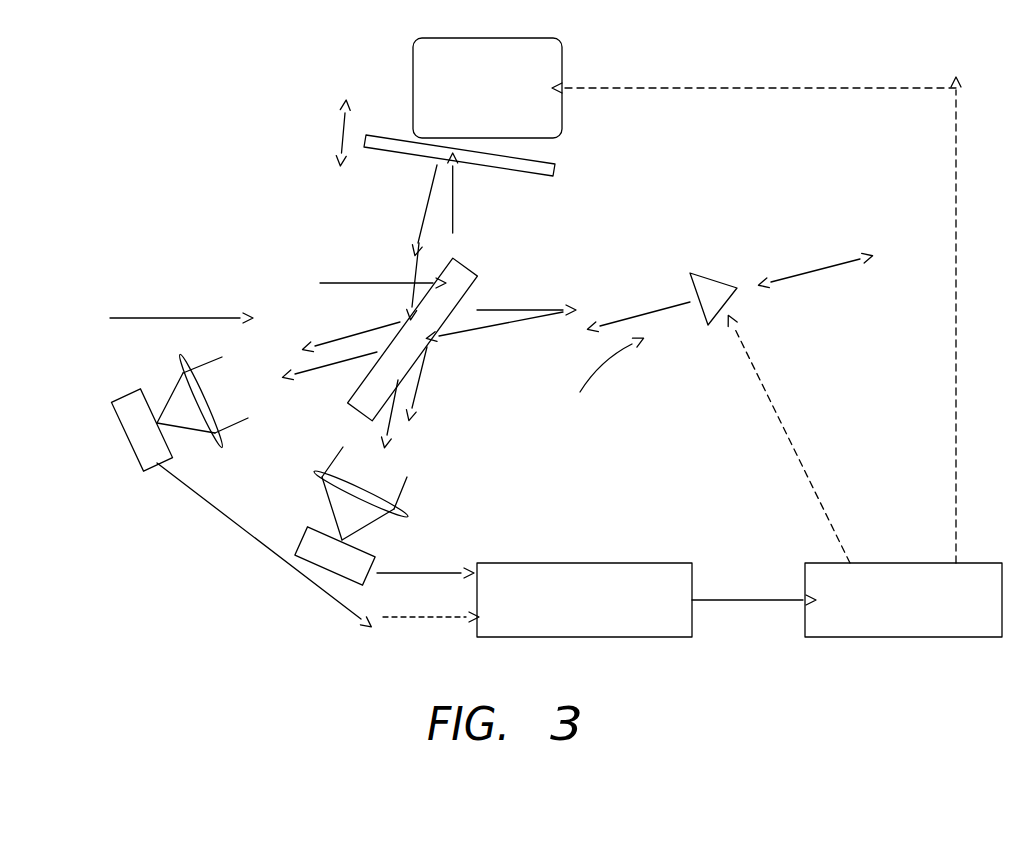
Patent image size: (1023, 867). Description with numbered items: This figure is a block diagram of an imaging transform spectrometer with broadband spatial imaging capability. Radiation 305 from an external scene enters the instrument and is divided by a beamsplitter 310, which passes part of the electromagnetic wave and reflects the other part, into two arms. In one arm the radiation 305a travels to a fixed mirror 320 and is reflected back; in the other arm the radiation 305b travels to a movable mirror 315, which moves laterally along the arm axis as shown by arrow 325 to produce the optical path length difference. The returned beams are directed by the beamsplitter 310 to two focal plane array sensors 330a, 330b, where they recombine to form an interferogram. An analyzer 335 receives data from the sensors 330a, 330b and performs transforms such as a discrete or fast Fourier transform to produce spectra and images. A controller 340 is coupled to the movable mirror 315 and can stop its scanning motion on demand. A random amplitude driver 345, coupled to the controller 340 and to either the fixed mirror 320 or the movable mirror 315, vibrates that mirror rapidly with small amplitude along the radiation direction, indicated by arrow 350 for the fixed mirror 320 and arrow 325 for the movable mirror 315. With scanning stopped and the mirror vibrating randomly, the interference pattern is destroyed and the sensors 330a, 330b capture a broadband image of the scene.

The radiation 305 is at (150, 322).
The radiation in fixed-mirror arm 305a is at (408, 208).
The radiation in movable-mirror arm 305b is at (581, 391).
The beamsplitter 310 is at (473, 273).
The movable mirror 315 is at (703, 277).
The fixed mirror 320 is at (553, 163).
The arrow indicating movable mirror motion 325 is at (833, 268).
The focal plane array sensor 330a is at (145, 468).
The focal plane array sensor 330b is at (377, 557).
The analyzer 335 is at (592, 637).
The controller 340 is at (873, 637).
The random amplitude driver 345 is at (563, 50).
The arrow indicating fixed mirror vibration 350 is at (338, 133).